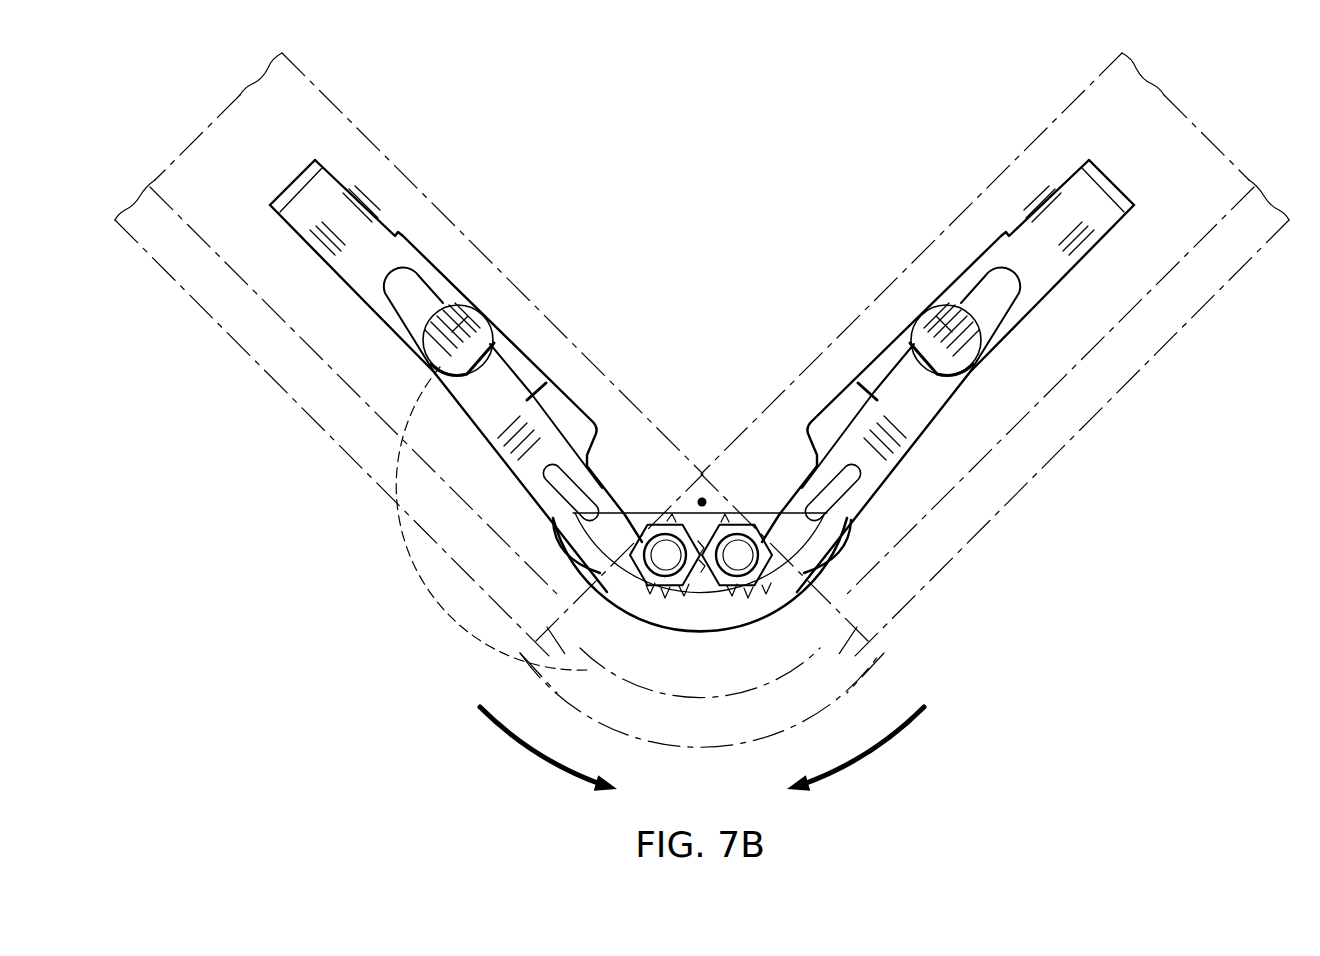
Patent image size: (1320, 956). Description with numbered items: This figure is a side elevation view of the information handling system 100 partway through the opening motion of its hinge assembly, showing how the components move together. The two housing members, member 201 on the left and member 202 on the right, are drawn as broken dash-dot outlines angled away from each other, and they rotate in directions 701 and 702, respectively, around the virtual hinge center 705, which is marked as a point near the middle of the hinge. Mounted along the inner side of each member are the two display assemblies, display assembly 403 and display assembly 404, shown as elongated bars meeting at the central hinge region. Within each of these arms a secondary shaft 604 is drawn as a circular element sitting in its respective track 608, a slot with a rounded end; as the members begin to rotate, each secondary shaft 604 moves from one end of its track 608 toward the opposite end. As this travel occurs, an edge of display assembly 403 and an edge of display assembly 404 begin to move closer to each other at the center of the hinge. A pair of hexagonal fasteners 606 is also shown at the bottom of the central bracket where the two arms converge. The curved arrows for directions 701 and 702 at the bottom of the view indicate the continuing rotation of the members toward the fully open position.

The information handling system 100 is at (603, 68).
The member 201 is at (269, 390).
The member 202 is at (1076, 458).
The display assembly 403 is at (432, 148).
The display assembly 404 is at (972, 148).
The secondary shaft 604 is at (496, 334).
The fastener nut 606 is at (657, 525).
The track 608 is at (405, 310).
The virtual hinge center 705 is at (705, 500).
The direction 701 is at (528, 750).
The direction 702 is at (876, 750).